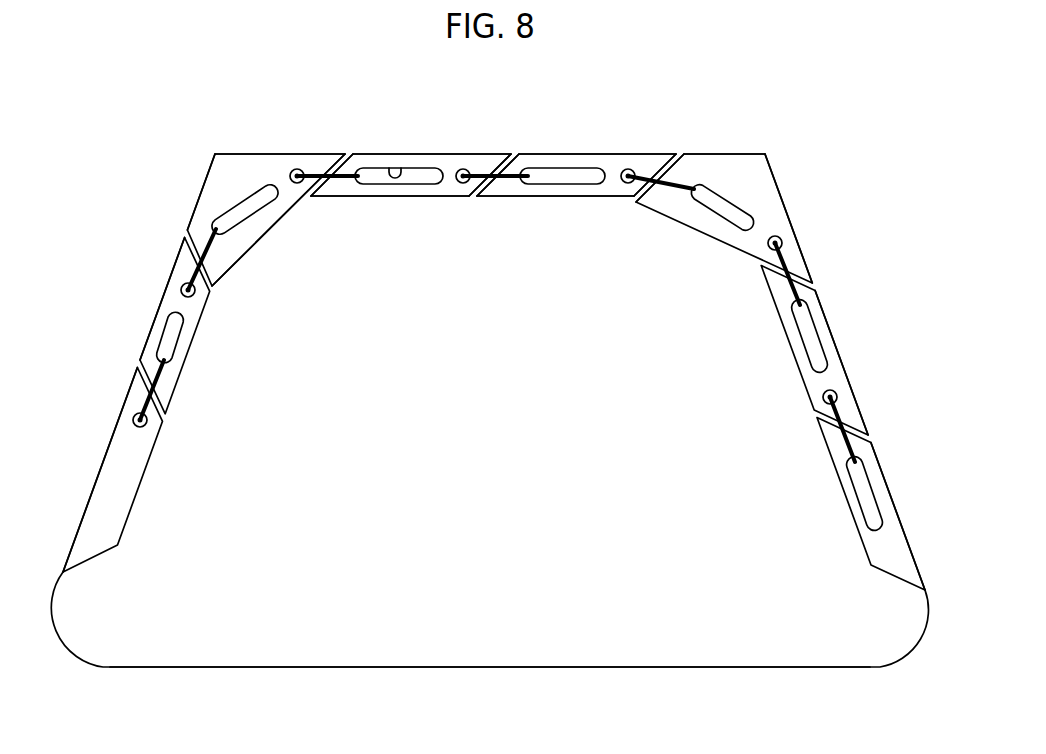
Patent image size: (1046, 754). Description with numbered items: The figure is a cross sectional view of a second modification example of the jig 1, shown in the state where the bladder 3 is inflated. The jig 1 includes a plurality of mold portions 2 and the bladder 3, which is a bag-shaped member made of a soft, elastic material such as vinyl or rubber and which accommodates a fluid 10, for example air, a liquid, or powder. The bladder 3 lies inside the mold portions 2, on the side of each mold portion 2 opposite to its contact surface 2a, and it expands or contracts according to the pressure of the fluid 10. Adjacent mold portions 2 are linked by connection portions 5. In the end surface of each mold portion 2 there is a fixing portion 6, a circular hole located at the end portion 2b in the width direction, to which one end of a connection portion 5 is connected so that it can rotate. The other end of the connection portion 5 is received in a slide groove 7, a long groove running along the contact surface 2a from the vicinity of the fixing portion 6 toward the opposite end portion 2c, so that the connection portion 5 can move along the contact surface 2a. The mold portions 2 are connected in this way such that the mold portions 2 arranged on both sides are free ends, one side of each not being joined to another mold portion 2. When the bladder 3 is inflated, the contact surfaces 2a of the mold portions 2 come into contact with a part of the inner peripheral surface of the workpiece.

The jig 1 is at (773, 130).
The mold portion 2 is at (233, 165).
The contact surface 2a is at (261, 153).
The end portion 2b is at (497, 185).
The end portion 2c is at (505, 165).
The bladder 3 is at (748, 668).
The connection portion 5 is at (352, 168).
The fixing portion 6 is at (300, 170).
The slide groove 7 is at (400, 170).
The fluid 10 is at (565, 640).